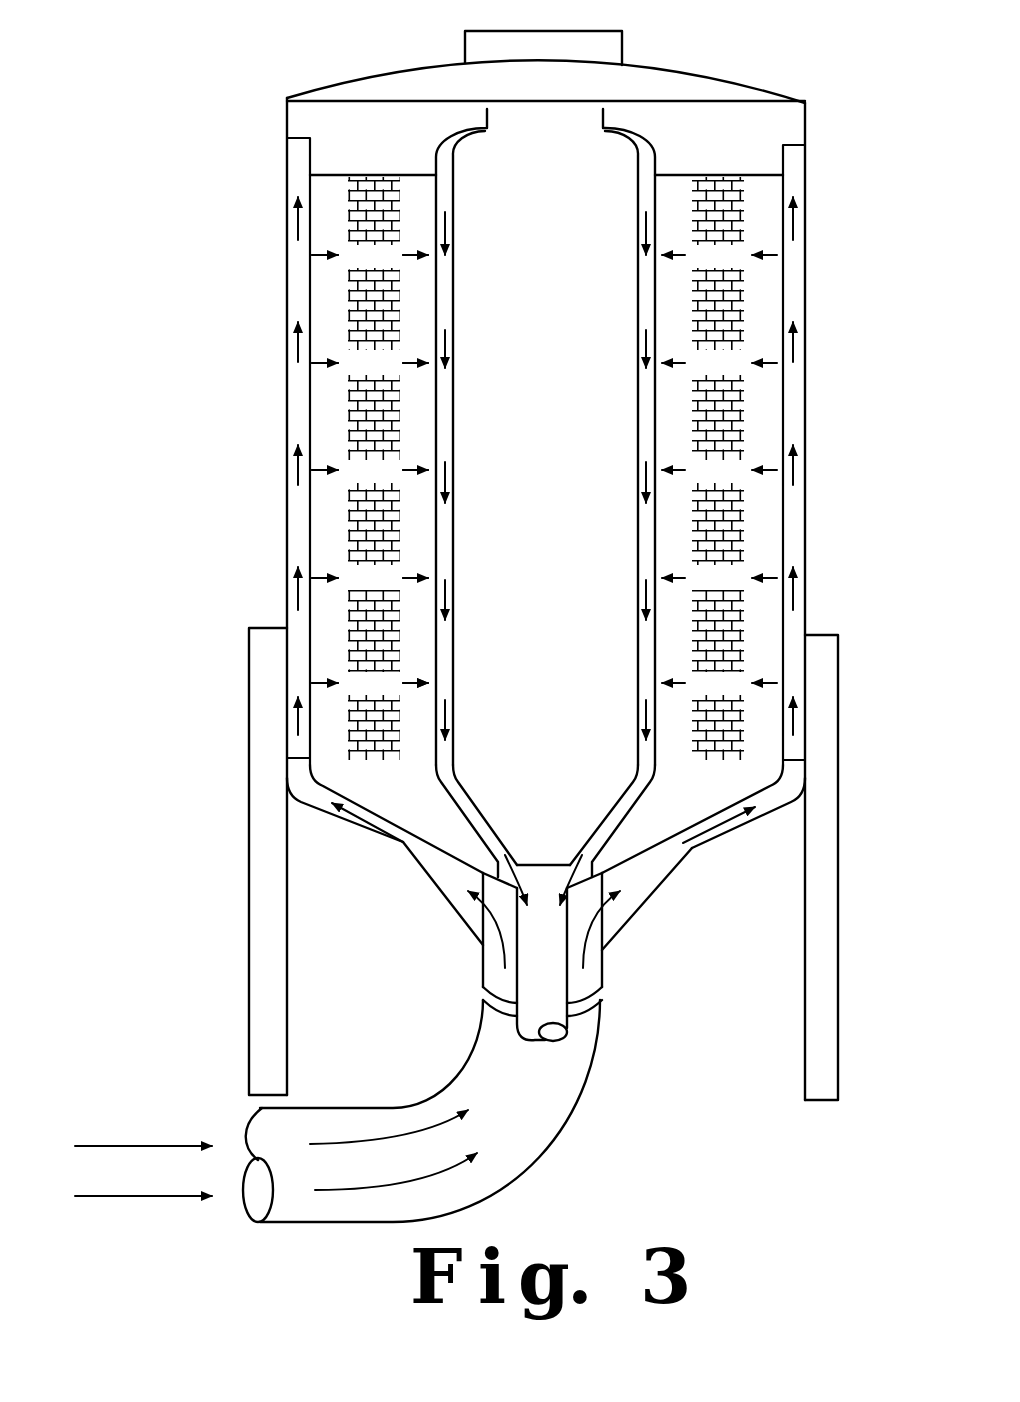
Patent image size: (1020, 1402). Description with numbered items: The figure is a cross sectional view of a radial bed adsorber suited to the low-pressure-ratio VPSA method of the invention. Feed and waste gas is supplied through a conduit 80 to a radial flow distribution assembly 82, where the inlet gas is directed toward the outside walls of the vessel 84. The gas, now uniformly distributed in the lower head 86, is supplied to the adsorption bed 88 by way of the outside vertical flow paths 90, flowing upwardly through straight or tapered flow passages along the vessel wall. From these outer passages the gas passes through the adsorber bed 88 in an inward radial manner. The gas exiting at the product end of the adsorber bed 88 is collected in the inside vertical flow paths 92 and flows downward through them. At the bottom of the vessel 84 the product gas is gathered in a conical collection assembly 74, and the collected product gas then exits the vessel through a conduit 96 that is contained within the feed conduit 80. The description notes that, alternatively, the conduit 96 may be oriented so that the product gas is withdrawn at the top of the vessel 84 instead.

The conical collection assembly 74 is at (543, 880).
The conduit 80 is at (570, 1113).
The radial flow distribution assembly 82 is at (438, 883).
The vessel 84 is at (816, 366).
The lower head 86 is at (373, 828).
The adsorption bed 88 is at (326, 412).
The outside vertical flow paths 90 is at (292, 526).
The inside vertical flow paths 92 is at (622, 418).
The conduit 96 is at (550, 990).